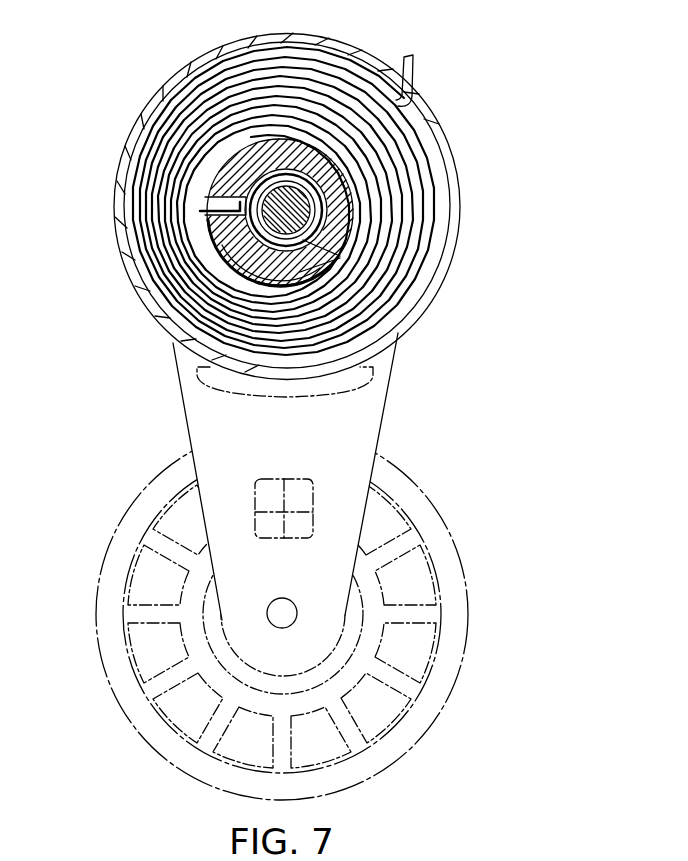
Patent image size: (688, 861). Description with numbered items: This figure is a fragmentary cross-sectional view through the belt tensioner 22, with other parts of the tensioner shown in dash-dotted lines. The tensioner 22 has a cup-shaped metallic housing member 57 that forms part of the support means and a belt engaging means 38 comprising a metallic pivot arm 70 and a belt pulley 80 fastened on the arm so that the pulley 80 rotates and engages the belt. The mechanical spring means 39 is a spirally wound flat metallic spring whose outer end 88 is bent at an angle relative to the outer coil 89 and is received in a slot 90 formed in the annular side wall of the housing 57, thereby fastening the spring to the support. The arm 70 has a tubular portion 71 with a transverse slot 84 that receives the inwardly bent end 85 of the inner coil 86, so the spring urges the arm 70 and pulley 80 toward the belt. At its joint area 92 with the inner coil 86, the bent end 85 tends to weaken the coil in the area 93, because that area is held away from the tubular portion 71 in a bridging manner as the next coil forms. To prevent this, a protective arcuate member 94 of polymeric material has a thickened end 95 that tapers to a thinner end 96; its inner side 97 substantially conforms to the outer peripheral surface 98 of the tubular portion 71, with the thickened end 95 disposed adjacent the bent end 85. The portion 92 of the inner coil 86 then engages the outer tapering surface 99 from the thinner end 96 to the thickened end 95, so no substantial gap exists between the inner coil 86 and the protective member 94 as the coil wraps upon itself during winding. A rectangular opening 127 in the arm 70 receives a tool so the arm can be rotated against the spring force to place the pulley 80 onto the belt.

The belt tensioner 22 is at (493, 113).
The belt engaging means 38 is at (344, 614).
The mechanical spring means 39 is at (430, 203).
The housing member 57 is at (162, 85).
The pivot arm 70 is at (383, 427).
The tubular portion 71 is at (338, 188).
The belt pulley 80 is at (468, 629).
The transverse slot 84 is at (240, 207).
The inwardly bent end 85 is at (222, 196).
The inner coil 86 is at (235, 157).
The outer end 88 is at (420, 58).
The outer coil 89 is at (347, 67).
The slot 90 is at (428, 112).
The joint area 92 is at (205, 223).
The area 93 is at (205, 212).
The protective arcuate member 94 is at (238, 290).
The thickened end 95 is at (222, 262).
The thinner end 96 is at (335, 270).
The inner side 97 is at (340, 247).
The outer peripheral surface 98 is at (248, 320).
The outer tapering surface 99 is at (197, 367).
The rectangular opening 127 is at (255, 490).